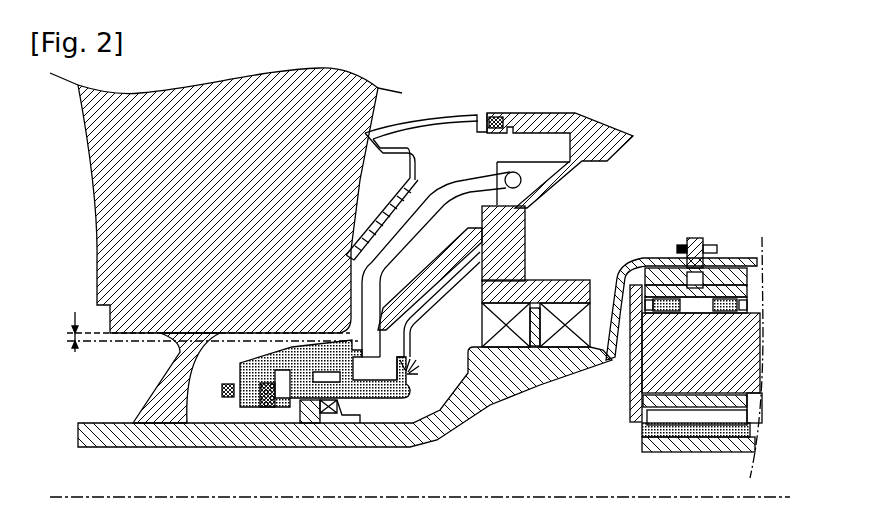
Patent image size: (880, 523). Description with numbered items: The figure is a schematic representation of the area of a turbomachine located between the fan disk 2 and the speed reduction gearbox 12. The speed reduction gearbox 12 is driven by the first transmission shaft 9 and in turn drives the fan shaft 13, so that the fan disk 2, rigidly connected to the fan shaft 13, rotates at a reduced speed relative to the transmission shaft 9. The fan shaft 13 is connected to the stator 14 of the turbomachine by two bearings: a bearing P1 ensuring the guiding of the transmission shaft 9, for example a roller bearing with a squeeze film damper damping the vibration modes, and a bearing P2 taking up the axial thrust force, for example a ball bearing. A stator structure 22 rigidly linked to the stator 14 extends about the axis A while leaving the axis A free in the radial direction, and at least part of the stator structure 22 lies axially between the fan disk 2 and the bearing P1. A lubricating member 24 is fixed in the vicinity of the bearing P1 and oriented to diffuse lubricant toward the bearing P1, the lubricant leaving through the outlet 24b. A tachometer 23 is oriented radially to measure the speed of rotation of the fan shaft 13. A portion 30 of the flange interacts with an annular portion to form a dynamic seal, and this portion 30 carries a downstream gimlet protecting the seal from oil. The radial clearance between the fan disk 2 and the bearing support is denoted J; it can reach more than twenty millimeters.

The fan disk 2 is at (226, 245).
The first transmission shaft 9 is at (700, 452).
The speed reduction gearbox 12 is at (684, 357).
The fan shaft 13 is at (195, 435).
The stator 14 is at (521, 117).
The stator structure 22 is at (388, 416).
The tachometer 23 is at (222, 392).
The lubricating member 24 is at (305, 416).
The oil outlet 24b is at (414, 357).
The portion of the flange 30 is at (262, 400).
The bearing P1 is at (352, 403).
The bearing P2 is at (597, 330).
The axis A is at (305, 497).
The radial clearance J is at (211, 332).